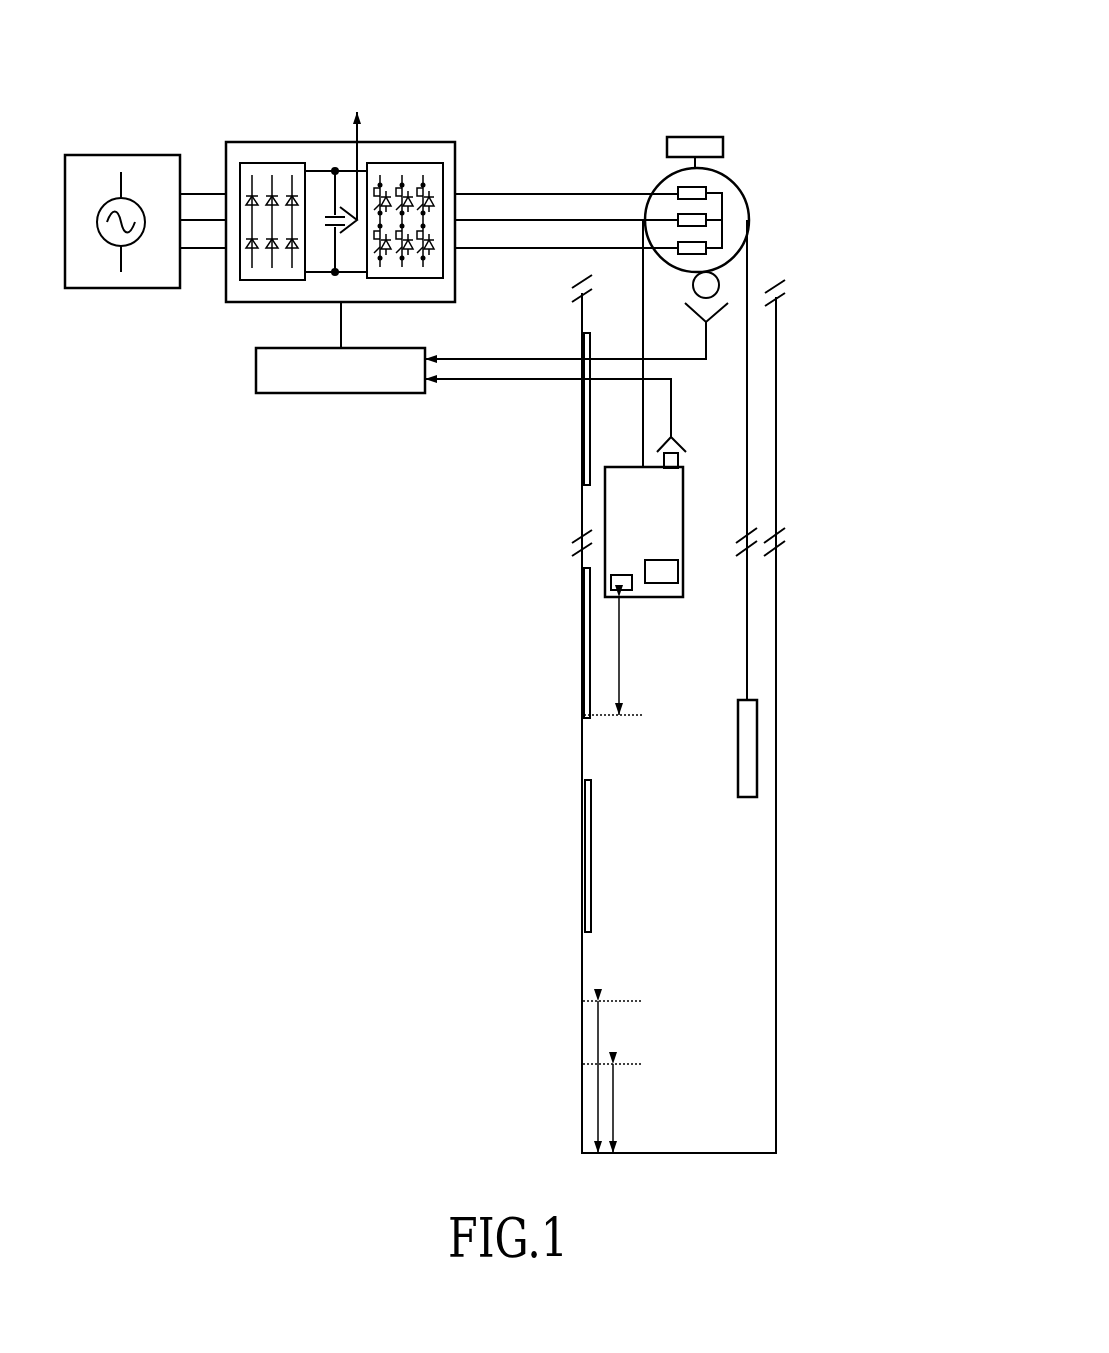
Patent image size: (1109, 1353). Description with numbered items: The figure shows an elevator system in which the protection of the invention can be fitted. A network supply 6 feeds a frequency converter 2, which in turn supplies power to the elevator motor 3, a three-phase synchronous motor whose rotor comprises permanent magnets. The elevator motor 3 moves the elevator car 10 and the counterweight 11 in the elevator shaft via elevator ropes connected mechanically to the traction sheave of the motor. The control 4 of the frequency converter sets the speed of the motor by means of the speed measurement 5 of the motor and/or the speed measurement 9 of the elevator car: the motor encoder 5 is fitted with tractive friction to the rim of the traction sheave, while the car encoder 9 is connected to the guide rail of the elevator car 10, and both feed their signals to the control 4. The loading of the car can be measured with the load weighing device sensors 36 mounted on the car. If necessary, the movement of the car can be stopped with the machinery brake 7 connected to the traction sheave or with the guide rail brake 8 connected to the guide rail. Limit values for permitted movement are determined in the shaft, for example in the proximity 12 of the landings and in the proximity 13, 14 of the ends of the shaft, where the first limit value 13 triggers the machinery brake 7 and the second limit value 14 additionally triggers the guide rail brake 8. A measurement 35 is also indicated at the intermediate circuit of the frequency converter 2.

The frequency converter 2 is at (428, 142).
The elevator motor 3 is at (733, 185).
The control of the frequency converter 4 is at (280, 393).
The motor encoder 5 is at (720, 285).
The network supply 6 is at (102, 156).
The machinery brake 7 is at (697, 137).
The guide rail brake 8 is at (678, 570).
The car encoder 9 is at (680, 465).
The elevator car 10 is at (665, 597).
The counterweight 11 is at (750, 762).
The proximity of the landings 12 is at (619, 660).
The first limit value 13 is at (620, 1000).
The second limit value 14 is at (630, 1063).
The DC intermediate circuit voltage measurement 35 is at (336, 142).
The load weighing device sensors 36 is at (611, 583).